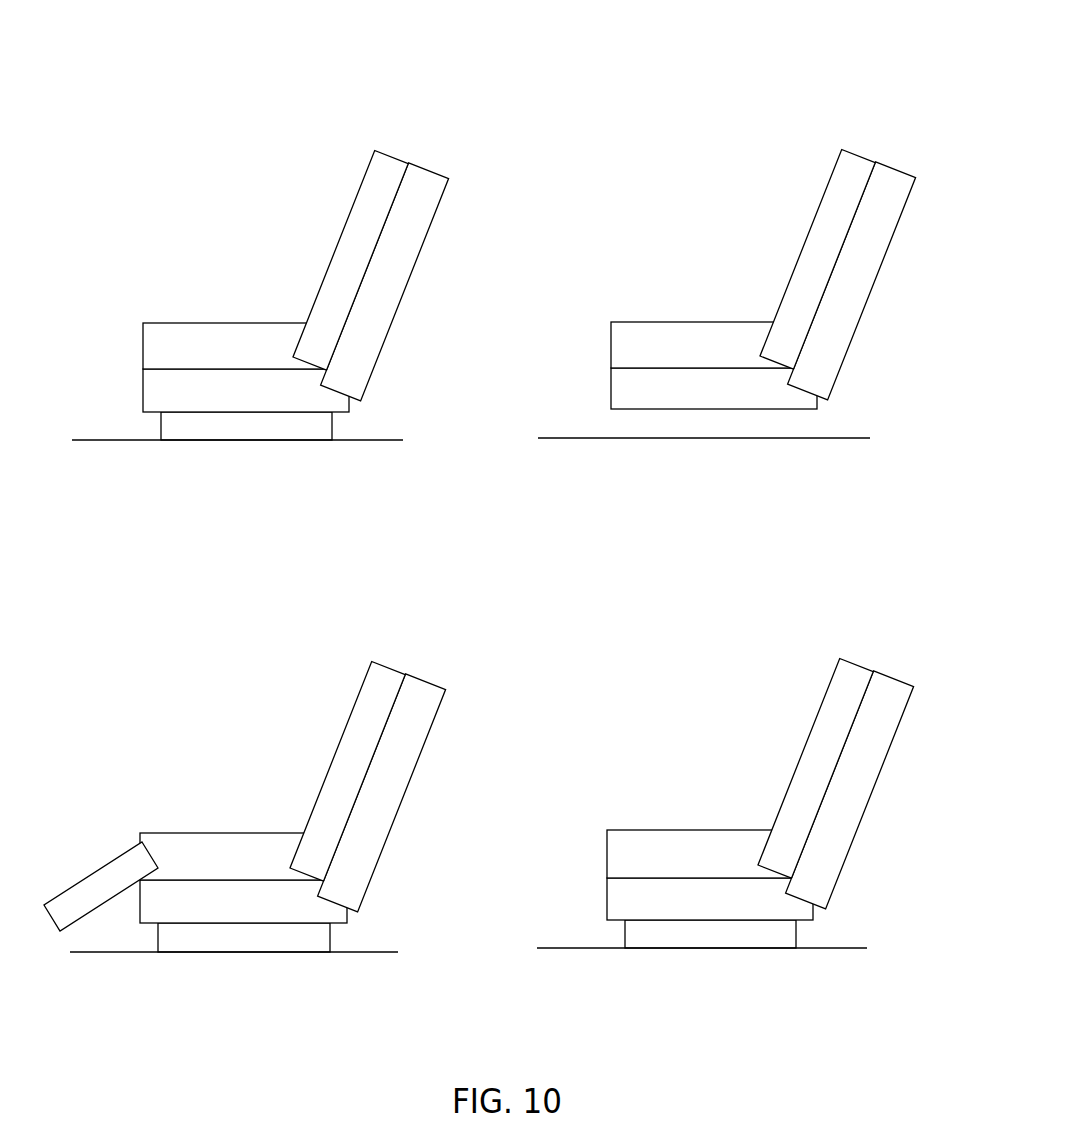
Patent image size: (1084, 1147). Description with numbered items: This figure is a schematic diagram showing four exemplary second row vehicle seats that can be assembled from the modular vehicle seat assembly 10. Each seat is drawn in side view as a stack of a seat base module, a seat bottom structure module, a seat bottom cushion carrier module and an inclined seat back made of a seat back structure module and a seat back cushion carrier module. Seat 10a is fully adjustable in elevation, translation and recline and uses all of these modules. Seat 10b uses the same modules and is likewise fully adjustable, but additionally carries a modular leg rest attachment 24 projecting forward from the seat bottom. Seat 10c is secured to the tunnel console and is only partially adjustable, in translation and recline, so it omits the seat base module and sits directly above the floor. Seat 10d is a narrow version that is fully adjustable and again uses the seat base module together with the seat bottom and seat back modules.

The modular vehicle seat assembly 10 is at (606, 46).
The seat 10a is at (240, 216).
The seat 10b is at (240, 728).
The seat 10c is at (708, 213).
The seat 10d is at (708, 726).
The modular leg rest attachment 24 is at (92, 872).